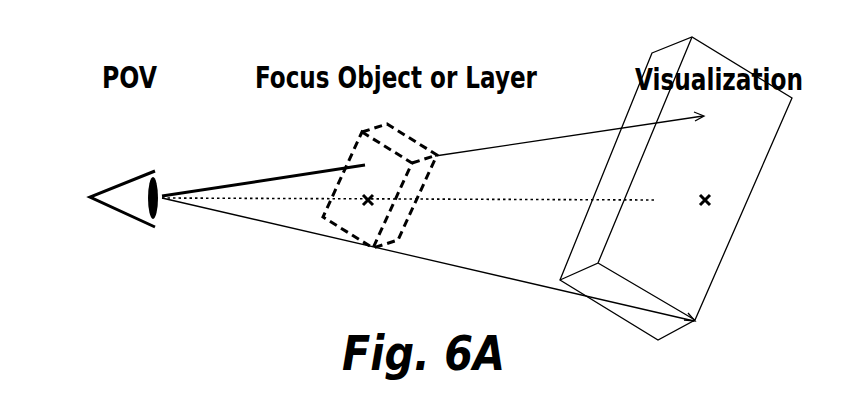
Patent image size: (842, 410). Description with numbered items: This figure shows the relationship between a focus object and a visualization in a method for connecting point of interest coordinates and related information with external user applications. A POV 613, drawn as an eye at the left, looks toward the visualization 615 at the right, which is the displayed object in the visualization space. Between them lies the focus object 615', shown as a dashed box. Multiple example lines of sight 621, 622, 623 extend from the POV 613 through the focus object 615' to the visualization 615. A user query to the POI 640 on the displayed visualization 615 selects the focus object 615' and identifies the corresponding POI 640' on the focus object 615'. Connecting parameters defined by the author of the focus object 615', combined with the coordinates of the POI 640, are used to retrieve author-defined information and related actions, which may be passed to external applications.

The POV 613 is at (115, 185).
The visualization 615 is at (676, 188).
The focus object 615' is at (343, 181).
The line of sight 621 is at (522, 141).
The line of sight 622 is at (498, 198).
The line of sight 623 is at (458, 265).
The POI 640 is at (713, 175).
The POI on focus object 640' is at (313, 239).